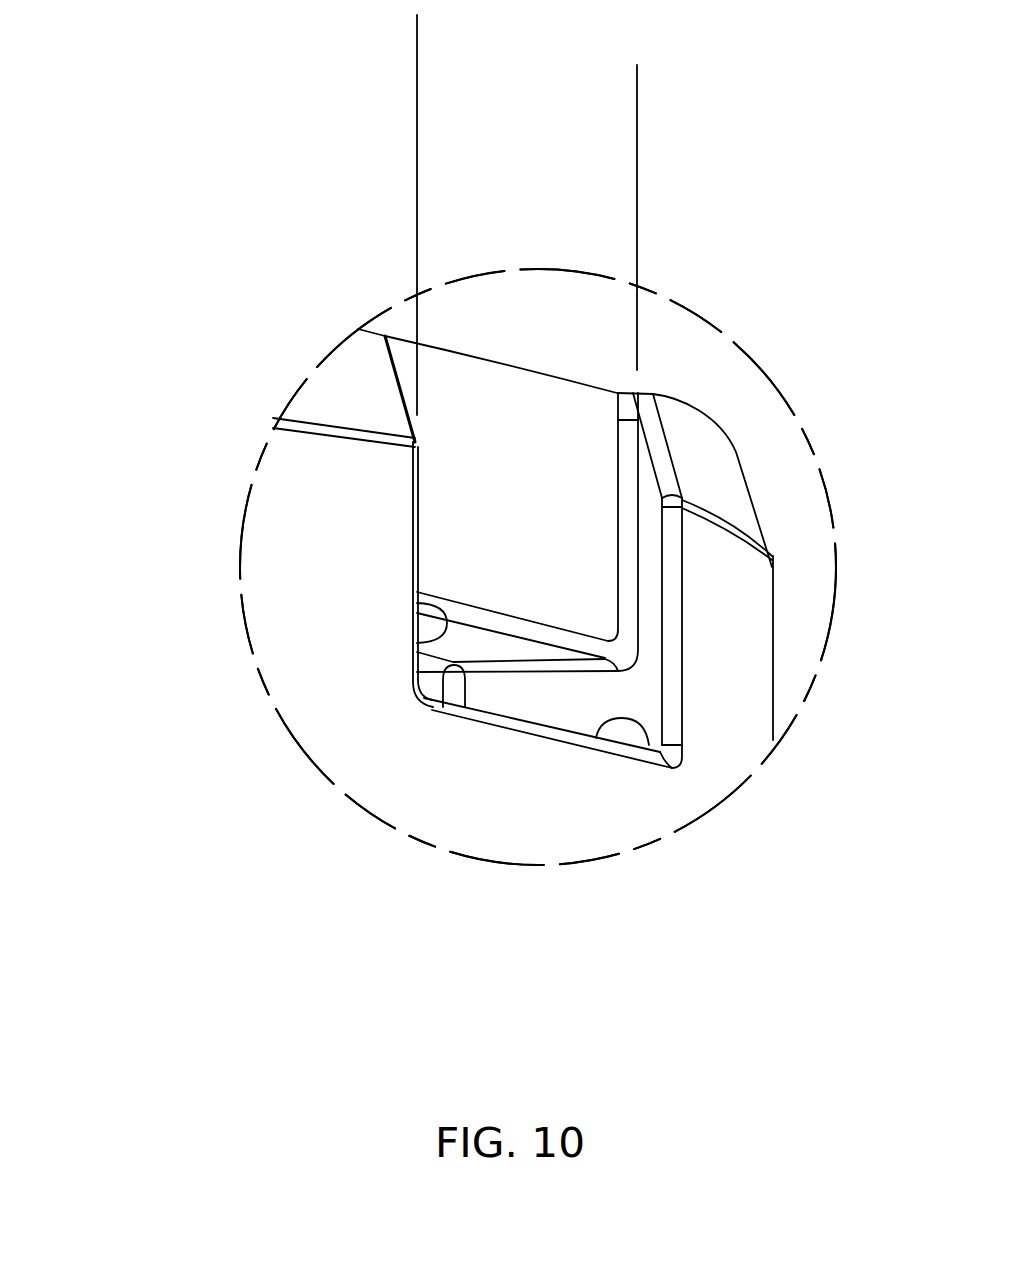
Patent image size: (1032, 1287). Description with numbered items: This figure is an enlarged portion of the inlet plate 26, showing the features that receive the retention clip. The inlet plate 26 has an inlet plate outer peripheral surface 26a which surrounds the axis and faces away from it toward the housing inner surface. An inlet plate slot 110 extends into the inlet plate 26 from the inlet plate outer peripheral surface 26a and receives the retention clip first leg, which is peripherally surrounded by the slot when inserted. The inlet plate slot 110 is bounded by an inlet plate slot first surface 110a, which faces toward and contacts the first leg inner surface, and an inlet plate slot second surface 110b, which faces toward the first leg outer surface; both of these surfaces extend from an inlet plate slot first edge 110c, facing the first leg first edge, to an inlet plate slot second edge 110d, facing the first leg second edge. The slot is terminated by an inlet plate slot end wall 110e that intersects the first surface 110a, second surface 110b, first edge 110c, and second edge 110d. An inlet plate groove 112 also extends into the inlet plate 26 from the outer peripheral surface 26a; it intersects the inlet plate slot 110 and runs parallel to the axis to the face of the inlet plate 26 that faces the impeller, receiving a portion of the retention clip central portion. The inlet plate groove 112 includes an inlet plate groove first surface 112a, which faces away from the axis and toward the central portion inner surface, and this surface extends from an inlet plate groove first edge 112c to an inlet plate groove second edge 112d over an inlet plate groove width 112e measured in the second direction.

The inlet plate 26 is at (332, 695).
The inlet plate outer peripheral surface 26a is at (538, 567).
The inlet plate slot 110 is at (433, 718).
The inlet plate slot first surface 110a is at (495, 643).
The inlet plate slot second surface 110b is at (649, 745).
The inlet plate slot first edge 110c is at (590, 703).
The inlet plate slot second edge 110d is at (417, 603).
The inlet plate slot end wall 110e is at (432, 686).
The inlet plate groove 112 is at (558, 380).
The inlet plate groove first surface 112a is at (497, 545).
The inlet plate groove first edge 112c is at (652, 522).
The inlet plate groove second edge 112d is at (417, 508).
The inlet plate groove width 112e is at (624, 90).